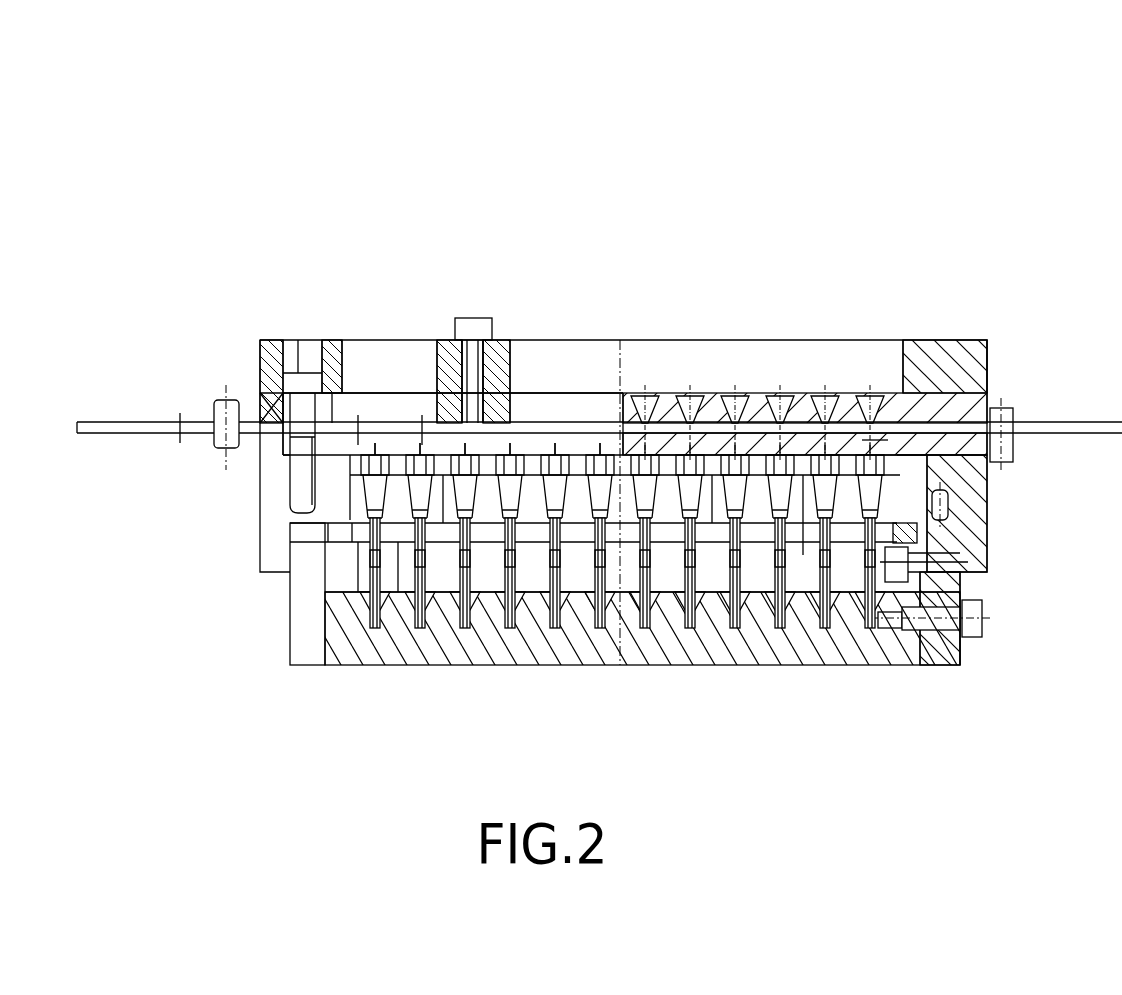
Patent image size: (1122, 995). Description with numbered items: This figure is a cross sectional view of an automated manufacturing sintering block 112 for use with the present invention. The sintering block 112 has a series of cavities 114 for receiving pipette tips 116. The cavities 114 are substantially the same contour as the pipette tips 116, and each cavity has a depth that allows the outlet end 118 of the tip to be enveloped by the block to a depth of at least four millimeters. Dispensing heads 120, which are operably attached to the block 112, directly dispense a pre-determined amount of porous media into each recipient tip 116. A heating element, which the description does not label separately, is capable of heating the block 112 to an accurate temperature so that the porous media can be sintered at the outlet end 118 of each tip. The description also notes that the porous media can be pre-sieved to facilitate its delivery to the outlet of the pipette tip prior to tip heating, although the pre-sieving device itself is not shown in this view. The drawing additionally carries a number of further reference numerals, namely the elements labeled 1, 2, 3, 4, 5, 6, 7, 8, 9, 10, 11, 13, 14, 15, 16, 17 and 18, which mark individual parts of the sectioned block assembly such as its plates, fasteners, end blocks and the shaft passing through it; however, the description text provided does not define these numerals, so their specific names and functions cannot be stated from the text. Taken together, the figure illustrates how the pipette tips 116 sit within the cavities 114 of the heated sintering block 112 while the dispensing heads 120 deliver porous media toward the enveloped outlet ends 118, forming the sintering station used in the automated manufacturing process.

The sintering block 112 is at (414, 152).
The nozzle 1 is at (622, 615).
The nozzle plate 2 is at (347, 580).
The side block 3 is at (310, 645).
The end plate 4 is at (280, 560).
The intermediate plate 5 is at (574, 445).
The shaft 6 is at (1073, 422).
The distributor plate 7 is at (818, 420).
The end block 8 is at (948, 355).
The manifold 9 is at (733, 360).
The cover plate 10 is at (385, 422).
The bolt 11 is at (287, 425).
The collar 13 is at (1005, 418).
The screw 14 is at (483, 320).
The bolt 15 is at (298, 383).
The screw 16 is at (975, 610).
The screw 17 is at (903, 556).
The guide plate 18 is at (404, 575).
The cavities 114 is at (466, 580).
The pipette tips 116 is at (500, 598).
The outlet end 118 is at (560, 610).
The dispensing heads 120 is at (880, 445).